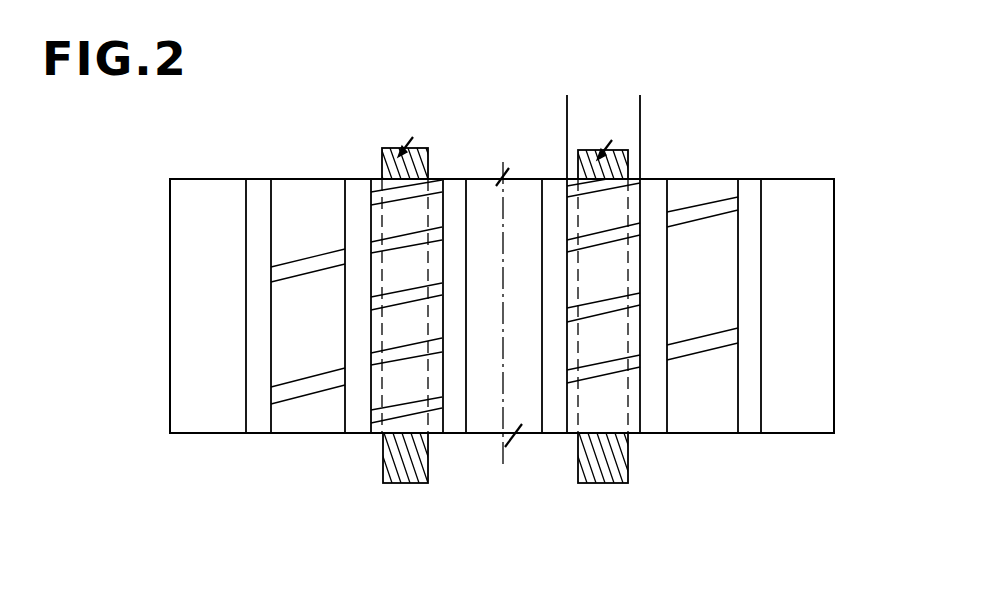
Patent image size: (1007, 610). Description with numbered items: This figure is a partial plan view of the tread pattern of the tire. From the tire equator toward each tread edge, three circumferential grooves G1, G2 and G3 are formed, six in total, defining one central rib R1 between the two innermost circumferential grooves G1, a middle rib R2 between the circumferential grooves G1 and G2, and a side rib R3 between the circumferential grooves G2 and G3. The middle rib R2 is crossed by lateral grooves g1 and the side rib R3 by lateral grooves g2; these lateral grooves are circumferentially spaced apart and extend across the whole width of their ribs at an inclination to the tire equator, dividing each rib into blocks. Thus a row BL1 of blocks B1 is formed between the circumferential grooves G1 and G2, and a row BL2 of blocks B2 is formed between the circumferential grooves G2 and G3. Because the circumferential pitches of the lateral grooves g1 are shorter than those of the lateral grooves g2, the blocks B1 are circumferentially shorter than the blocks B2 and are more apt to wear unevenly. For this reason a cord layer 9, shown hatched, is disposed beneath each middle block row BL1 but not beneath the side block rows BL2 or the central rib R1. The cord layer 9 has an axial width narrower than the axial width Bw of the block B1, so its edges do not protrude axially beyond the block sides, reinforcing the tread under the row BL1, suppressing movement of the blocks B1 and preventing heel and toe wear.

The row of blocks B2 BL2 is at (292, 179).
The row of blocks B1 BL1 is at (369, 185).
The lateral groove g2 is at (299, 266).
The lateral groove g1 is at (397, 242).
The block B1 is at (440, 205).
The block B2 is at (288, 210).
The axial width of the block B1 BW is at (640, 103).
The circumferential groove G3 is at (263, 434).
The side rib R3 is at (274, 273).
The circumferential groove G2 is at (355, 434).
The middle rib R2 is at (419, 297).
The circumferential groove G1 is at (455, 434).
The central rib R1 is at (479, 434).
The cord layer 9 is at (414, 480).